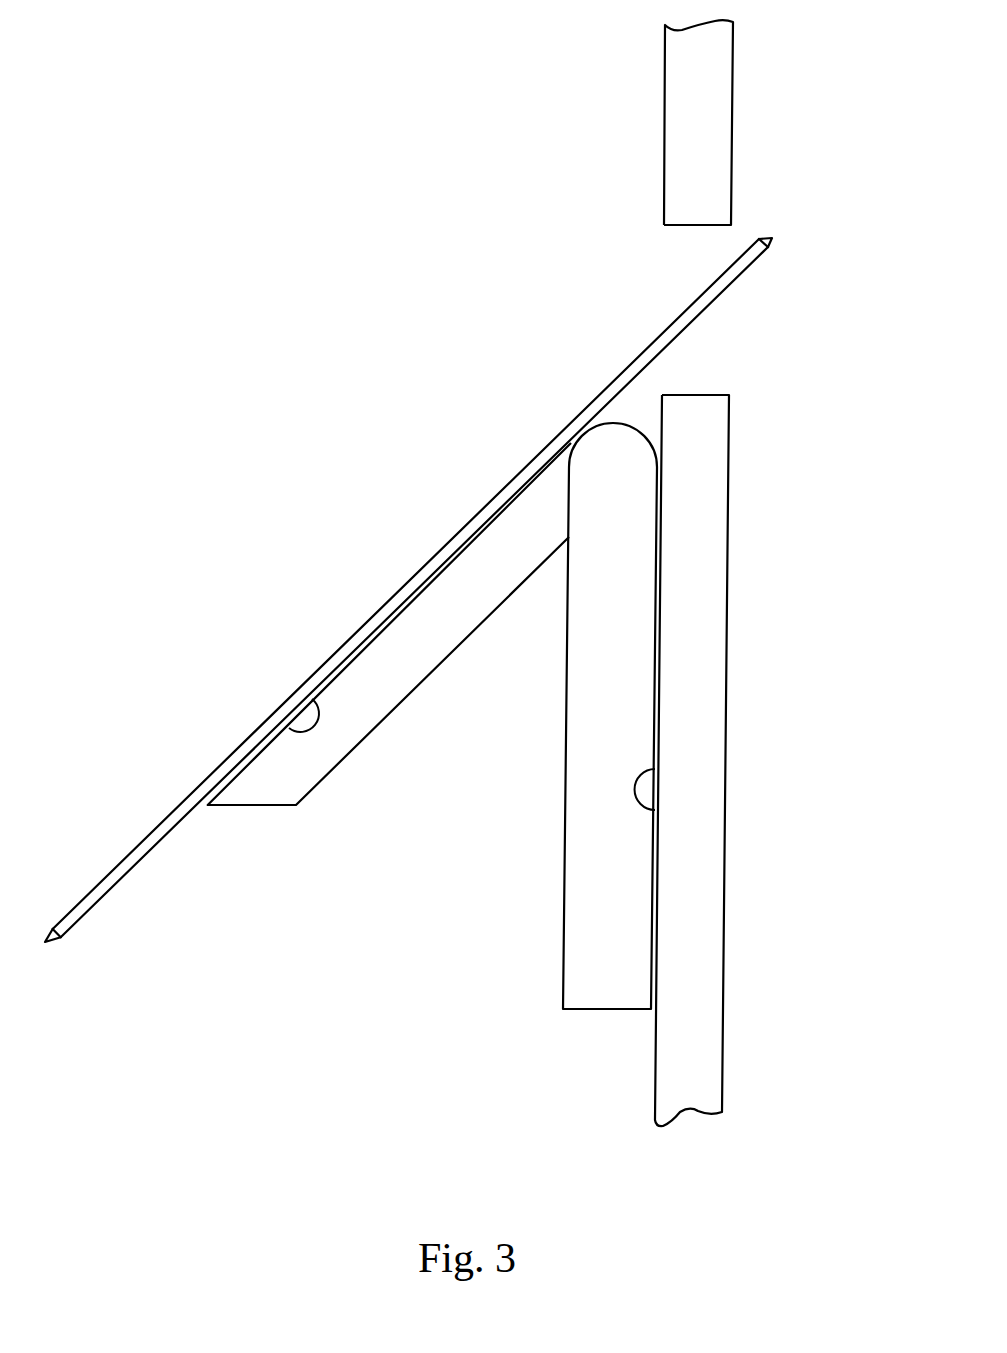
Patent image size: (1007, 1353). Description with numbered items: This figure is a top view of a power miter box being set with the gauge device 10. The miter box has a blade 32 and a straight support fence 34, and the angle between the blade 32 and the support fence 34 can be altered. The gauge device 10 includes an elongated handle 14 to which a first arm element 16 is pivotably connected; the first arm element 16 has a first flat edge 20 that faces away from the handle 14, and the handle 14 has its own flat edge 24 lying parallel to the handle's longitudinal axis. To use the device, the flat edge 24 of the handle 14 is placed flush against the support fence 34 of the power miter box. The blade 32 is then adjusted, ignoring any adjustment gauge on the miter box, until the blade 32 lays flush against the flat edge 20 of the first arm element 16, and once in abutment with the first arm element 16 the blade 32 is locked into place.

The gauge device 10 is at (403, 892).
The handle 14 is at (573, 878).
The first arm element 16 is at (327, 755).
The first flat edge 20 is at (292, 727).
The flat edge 24 is at (655, 810).
The blade 32 is at (445, 546).
The support fence 34 is at (710, 605).